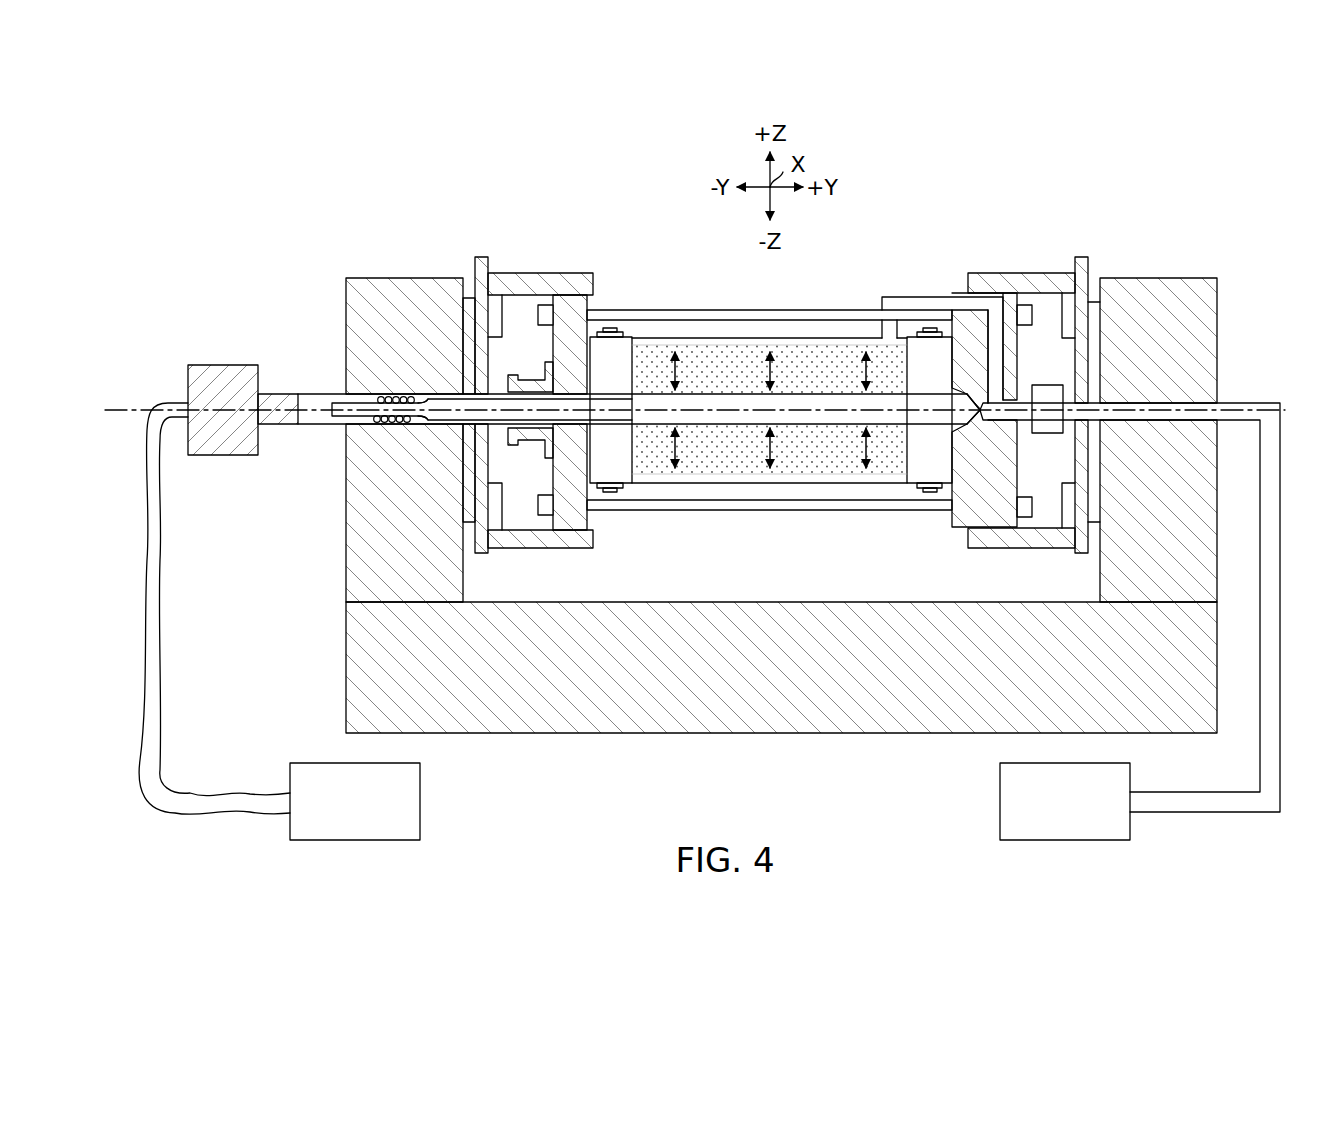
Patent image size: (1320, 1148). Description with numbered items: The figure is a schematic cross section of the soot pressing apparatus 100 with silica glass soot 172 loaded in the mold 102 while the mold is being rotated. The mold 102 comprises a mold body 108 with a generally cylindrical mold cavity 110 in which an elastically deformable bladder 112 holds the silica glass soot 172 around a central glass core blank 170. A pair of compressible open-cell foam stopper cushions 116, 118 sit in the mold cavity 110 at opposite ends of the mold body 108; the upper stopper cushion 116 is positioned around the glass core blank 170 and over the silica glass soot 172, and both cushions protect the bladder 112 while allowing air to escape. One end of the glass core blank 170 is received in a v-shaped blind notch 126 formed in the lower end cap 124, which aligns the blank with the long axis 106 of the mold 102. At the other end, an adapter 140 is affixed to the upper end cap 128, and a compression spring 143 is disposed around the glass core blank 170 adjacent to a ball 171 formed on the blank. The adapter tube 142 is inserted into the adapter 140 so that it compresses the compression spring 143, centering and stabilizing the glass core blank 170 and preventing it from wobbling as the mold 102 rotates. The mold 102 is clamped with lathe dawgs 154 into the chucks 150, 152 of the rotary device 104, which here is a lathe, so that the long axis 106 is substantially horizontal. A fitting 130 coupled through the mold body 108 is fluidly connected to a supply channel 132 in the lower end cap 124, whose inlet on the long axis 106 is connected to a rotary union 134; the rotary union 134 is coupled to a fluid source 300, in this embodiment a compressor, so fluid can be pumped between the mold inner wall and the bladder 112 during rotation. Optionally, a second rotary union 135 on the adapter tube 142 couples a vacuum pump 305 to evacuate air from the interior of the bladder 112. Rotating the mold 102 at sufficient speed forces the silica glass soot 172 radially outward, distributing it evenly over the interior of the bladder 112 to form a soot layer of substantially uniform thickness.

The soot pressing apparatus 100 is at (620, 212).
The mold 102 is at (840, 285).
The rotary device 104 is at (1162, 267).
The long axis 106 is at (124, 406).
The mold body 108 is at (850, 483).
The mold cavity 110 is at (805, 478).
The elastically deformable bladder 112 is at (747, 338).
The stopper cushion 116 is at (612, 470).
The stopper cushion 118 is at (930, 468).
The lower end cap 124 is at (963, 525).
The blind notch 126 is at (963, 428).
The upper end cap 128 is at (568, 300).
The fitting 130 is at (917, 300).
The supply channel 132 is at (980, 300).
The rotary union 134 is at (1048, 393).
The second rotary union 135 is at (222, 365).
The adapter 140 is at (512, 378).
The adapter tube 142 is at (297, 394).
The compression spring 143 is at (380, 398).
The chuck 150 is at (1090, 240).
The chuck 152 is at (460, 257).
The lathe dawgs 154 is at (528, 281).
The glass core blank 170 is at (455, 424).
The ball 171 is at (428, 404).
The silica glass soot 172 is at (716, 470).
The fluid source 300 is at (1000, 803).
The vacuum pump 305 is at (420, 805).